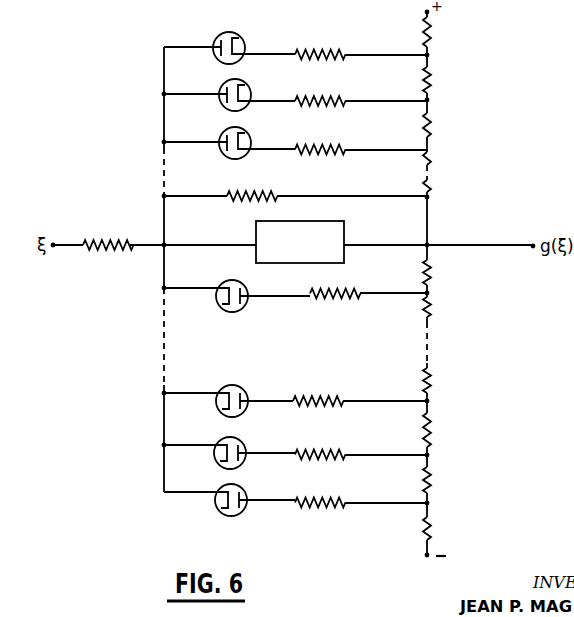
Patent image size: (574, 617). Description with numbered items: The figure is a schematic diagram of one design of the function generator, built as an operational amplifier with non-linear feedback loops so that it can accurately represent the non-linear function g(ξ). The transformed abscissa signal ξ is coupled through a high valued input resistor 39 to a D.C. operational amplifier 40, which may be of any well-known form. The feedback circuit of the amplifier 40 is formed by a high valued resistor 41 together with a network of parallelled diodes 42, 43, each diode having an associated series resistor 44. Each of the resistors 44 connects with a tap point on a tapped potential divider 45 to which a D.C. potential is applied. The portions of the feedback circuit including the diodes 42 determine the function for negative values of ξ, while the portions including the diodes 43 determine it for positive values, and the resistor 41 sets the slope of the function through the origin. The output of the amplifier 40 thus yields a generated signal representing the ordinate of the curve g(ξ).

The input resistor 39 is at (104, 242).
The D.C. operational amplifier 40 is at (344, 233).
The feedback resistor 41 is at (255, 194).
The diode 42 is at (243, 306).
The diode 43 is at (216, 40).
The series resistor 44 is at (316, 51).
The tapped potential divider 45 is at (431, 73).